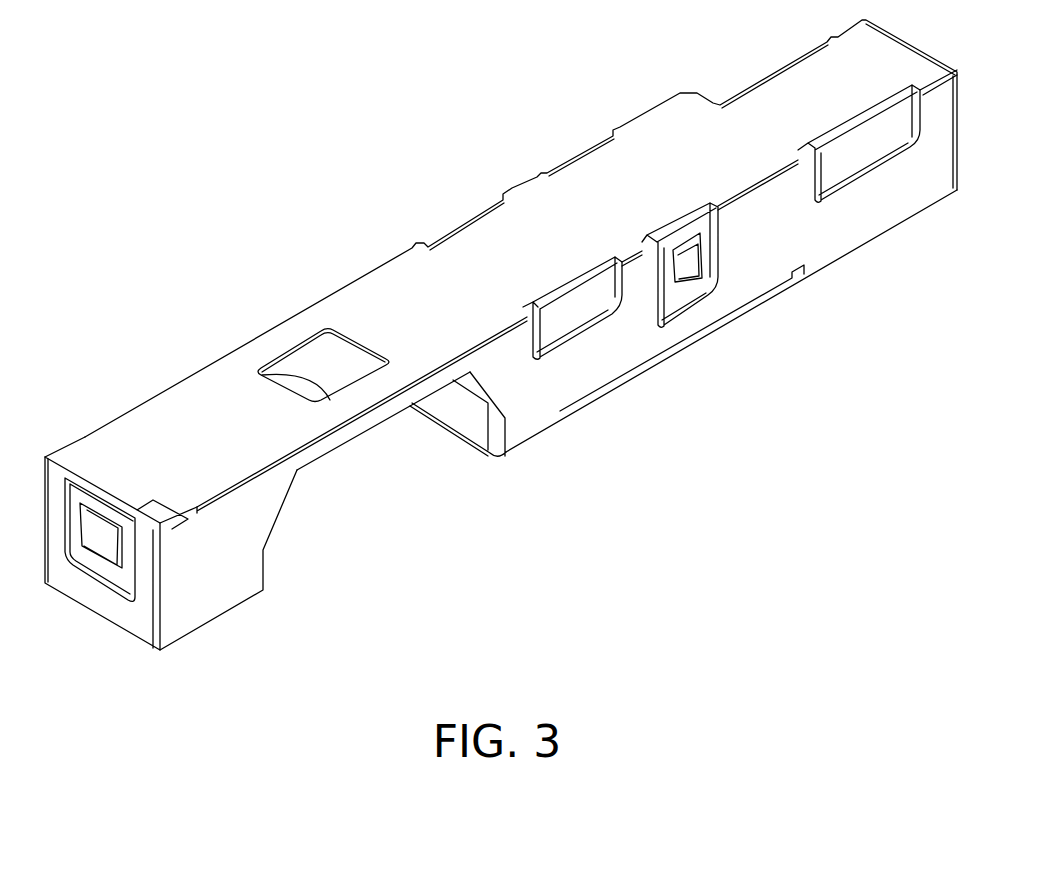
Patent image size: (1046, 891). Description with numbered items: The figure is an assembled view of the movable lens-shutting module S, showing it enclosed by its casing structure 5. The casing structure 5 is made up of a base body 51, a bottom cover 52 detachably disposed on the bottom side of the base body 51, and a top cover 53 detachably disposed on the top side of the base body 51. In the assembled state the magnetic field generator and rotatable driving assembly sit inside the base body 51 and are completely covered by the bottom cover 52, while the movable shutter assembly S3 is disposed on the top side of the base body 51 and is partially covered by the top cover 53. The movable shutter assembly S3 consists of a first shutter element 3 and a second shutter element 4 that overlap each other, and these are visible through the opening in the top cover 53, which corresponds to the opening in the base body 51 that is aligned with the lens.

The movable lens-shutting module S is at (73, 49).
The movable shutter assembly S3 is at (323, 298).
The first shutter element 3 is at (337, 350).
The second shutter element 4 is at (278, 367).
The casing structure 5 is at (501, 349).
The base body 51 is at (280, 520).
The bottom cover 52 is at (552, 440).
The top cover 53 is at (389, 325).